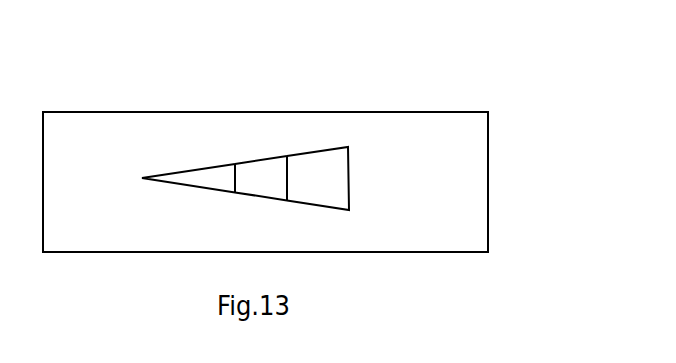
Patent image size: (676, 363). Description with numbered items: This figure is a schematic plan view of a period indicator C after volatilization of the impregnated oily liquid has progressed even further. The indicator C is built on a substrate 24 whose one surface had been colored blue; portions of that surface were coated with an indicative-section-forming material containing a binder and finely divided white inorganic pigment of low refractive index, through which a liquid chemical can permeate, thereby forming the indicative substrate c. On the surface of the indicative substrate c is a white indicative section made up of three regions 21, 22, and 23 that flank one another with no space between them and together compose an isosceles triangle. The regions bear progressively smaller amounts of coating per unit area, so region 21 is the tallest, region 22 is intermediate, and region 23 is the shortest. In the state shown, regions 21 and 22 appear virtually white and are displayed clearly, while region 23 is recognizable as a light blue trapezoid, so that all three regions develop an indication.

The region 21 is at (298, 185).
The region 22 is at (263, 177).
The region 23 is at (212, 177).
The substrate 24 is at (433, 225).
The indicative substrate c is at (385, 112).
The period indicator C is at (299, 151).